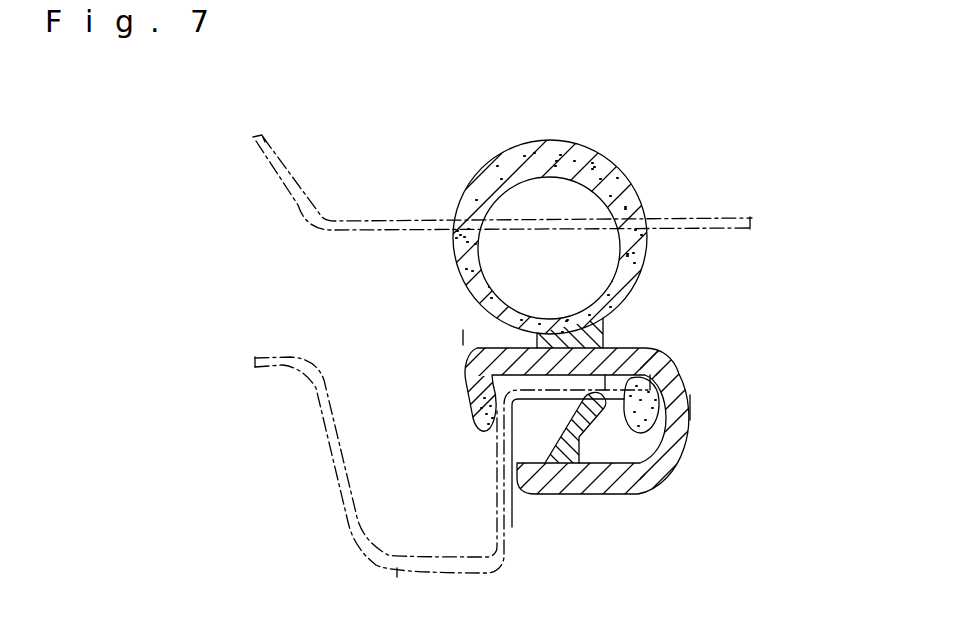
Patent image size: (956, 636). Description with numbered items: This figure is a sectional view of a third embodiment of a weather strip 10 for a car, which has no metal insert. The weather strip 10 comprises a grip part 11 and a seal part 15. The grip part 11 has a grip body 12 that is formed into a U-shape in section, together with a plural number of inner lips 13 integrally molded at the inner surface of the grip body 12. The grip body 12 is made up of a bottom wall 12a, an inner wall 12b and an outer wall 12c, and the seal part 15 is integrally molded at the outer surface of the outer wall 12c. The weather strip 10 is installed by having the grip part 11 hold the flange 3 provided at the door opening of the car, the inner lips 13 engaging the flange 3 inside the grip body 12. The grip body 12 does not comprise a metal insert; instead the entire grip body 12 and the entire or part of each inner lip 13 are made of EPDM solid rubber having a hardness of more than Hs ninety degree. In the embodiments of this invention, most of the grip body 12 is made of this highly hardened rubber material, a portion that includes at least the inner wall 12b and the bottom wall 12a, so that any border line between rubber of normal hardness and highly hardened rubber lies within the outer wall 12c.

The flange 3 is at (630, 343).
The weather strip 10 is at (440, 323).
The grip part 11 is at (704, 415).
The grip body 12 is at (665, 385).
The bottom wall 12a is at (670, 427).
The inner wall 12b is at (568, 482).
The outer wall 12c is at (523, 352).
The inner lip 13 is at (488, 407).
The seal part 15 is at (585, 172).